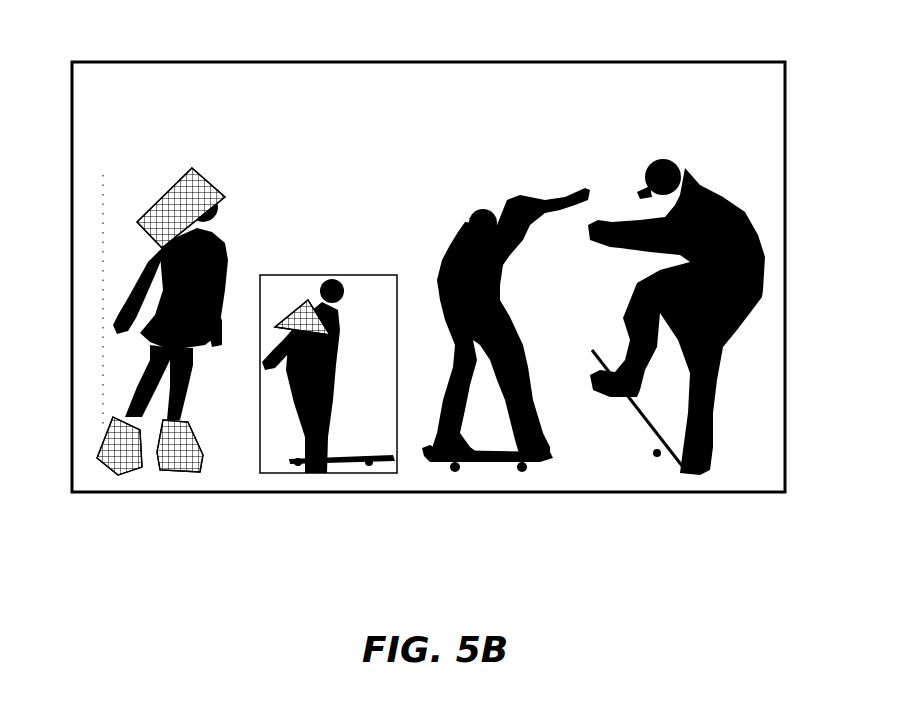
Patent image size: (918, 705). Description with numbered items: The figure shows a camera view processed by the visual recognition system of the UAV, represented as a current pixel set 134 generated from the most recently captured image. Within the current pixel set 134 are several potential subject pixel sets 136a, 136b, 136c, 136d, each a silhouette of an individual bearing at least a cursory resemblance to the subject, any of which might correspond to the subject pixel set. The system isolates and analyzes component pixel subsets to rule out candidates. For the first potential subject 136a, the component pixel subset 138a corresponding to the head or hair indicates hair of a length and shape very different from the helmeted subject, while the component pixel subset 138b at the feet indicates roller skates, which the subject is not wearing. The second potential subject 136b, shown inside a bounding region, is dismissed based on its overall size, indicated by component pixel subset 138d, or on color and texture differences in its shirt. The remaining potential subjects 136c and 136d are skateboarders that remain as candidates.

The current pixel set 134 is at (243, 61).
The potential subject pixel set 136a is at (240, 258).
The potential subject pixel set 136b is at (378, 274).
The potential subject pixel set 136c is at (478, 212).
The potential subject pixel set 136d is at (700, 170).
The component pixel subset 138a is at (167, 197).
The component pixel subset 138b is at (107, 473).
The component pixel subset 138d is at (332, 325).